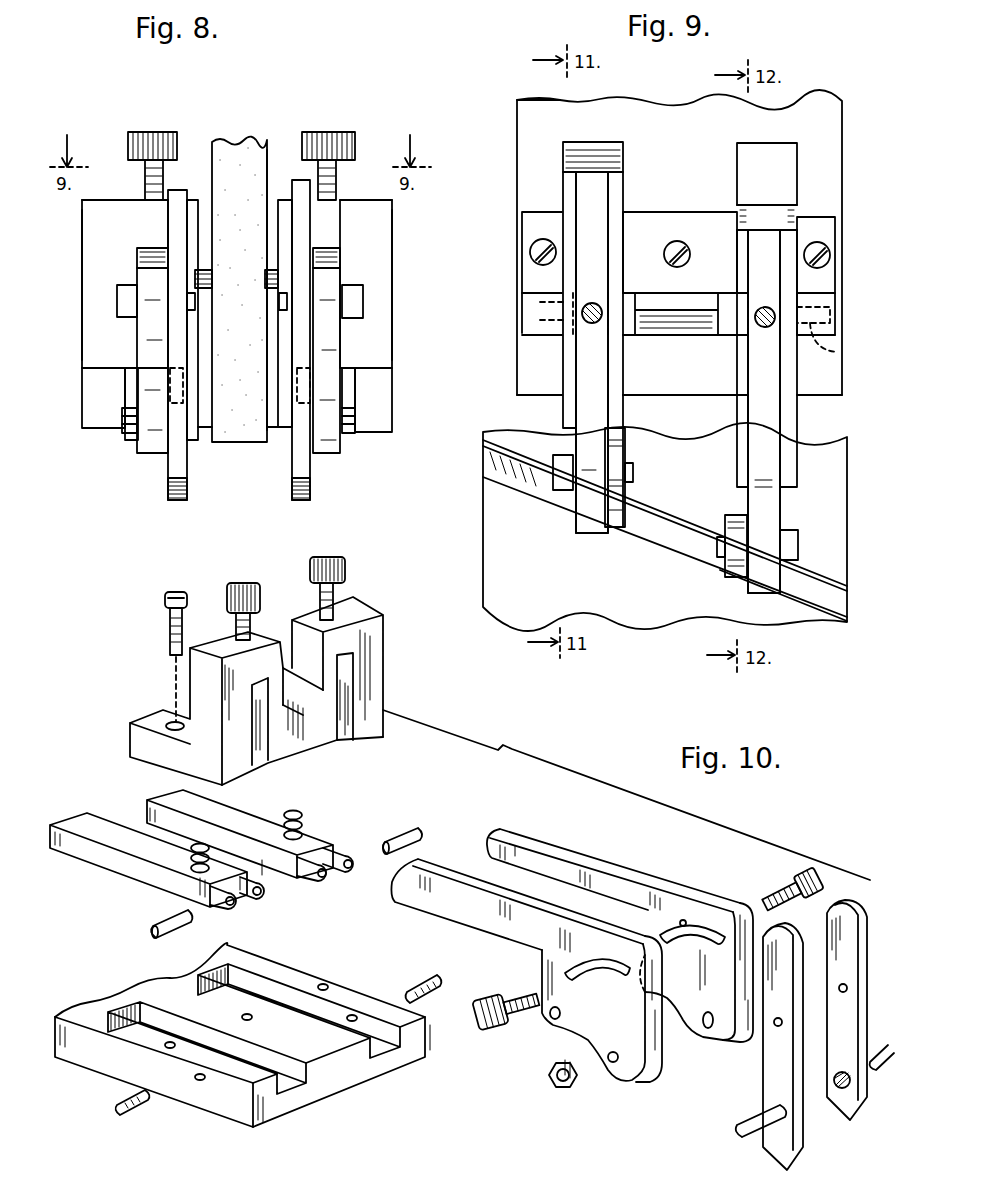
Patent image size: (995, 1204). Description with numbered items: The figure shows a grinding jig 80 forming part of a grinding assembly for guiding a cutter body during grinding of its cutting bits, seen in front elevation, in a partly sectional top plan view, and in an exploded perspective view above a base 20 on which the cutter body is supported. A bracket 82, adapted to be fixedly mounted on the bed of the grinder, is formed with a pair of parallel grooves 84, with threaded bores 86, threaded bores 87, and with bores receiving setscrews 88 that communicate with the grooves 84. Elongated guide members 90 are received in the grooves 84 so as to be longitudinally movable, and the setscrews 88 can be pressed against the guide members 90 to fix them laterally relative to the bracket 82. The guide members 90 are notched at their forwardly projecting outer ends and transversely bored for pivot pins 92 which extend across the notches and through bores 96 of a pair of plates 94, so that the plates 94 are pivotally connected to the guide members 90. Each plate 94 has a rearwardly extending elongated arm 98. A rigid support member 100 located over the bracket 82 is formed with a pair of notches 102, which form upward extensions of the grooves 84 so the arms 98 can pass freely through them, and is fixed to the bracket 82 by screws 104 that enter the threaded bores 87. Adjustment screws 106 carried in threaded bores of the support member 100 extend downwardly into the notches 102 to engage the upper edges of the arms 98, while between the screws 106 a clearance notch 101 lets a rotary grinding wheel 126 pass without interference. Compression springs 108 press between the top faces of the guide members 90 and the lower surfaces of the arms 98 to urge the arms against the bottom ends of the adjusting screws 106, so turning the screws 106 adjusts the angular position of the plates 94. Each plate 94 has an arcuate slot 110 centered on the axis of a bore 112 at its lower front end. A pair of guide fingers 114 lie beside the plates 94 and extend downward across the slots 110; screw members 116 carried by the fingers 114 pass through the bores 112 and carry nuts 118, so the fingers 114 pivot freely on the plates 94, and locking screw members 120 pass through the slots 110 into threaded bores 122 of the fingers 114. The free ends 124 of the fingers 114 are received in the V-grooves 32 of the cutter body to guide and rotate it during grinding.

In FIG. 9, the tool holder base 20 is at (636, 527).
In FIG. 9, the V-grooves 32 is at (636, 530).
In FIG. 8, the clamp assembly 80 is at (262, 222).
In FIG. 9, the clamp assembly 80 is at (519, 132).
In FIG. 8, the bracket 82 is at (214, 400).
In FIG. 9, the bracket 82 is at (679, 242).
In FIG. 10, the bracket 82 is at (235, 1035).
In FIG. 9, the grooves 84 is at (678, 370).
In FIG. 10, the grooves 84 is at (256, 1055).
In FIG. 10, the threaded bores 86 is at (271, 1051).
In FIG. 10, the threaded bores 87 is at (225, 1000).
In FIG. 9, the setscrews 88 is at (678, 311).
In FIG. 10, the setscrews 88 is at (265, 1042).
In FIG. 8, the guide members 90 is at (233, 397).
In FIG. 9, the guide members 90 is at (681, 329).
In FIG. 10, the guide members 90 is at (201, 839).
In FIG. 10, the pivot pins 92 is at (262, 863).
In FIG. 8, the plates 94 is at (236, 381).
In FIG. 9, the plates 94 is at (670, 504).
In FIG. 10, the plates 94 is at (647, 992).
In FIG. 10, the bores 96 is at (607, 1003).
In FIG. 8, the elongated arms 98 is at (237, 253).
In FIG. 9, the elongated arms 98 is at (681, 367).
In FIG. 10, the elongated arms 98 is at (560, 875).
In FIG. 8, the support member 100 is at (215, 284).
In FIG. 9, the support member 100 is at (707, 272).
In FIG. 10, the support member 100 is at (175, 708).
In FIG. 8, the clearance notch 101 is at (281, 269).
In FIG. 9, the clearance notch 101 is at (675, 298).
In FIG. 10, the clearance notch 101 is at (285, 639).
In FIG. 8, the notches 102 is at (237, 285).
In FIG. 10, the notches 102 is at (328, 691).
In FIG. 9, the screws 104 is at (680, 224).
In FIG. 10, the screws 104 is at (147, 623).
In FIG. 8, the adjustment screws 106 is at (241, 144).
In FIG. 9, the adjustment screws 106 is at (651, 293).
In FIG. 10, the adjustment screws 106 is at (303, 584).
In FIG. 10, the compression springs 108 is at (211, 838).
In FIG. 10, the arcuate slot 110 is at (641, 918).
In FIG. 10, the bore 112 is at (639, 1071).
In FIG. 8, the guide fingers 114 is at (233, 347).
In FIG. 9, the guide fingers 114 is at (701, 382).
In FIG. 10, the guide fingers 114 is at (806, 1028).
In FIG. 10, the screw members 116 is at (807, 1071).
In FIG. 8, the nuts 118 is at (244, 422).
In FIG. 10, the nuts 118 is at (540, 1091).
In FIG. 8, the locking screw members 120 is at (237, 285).
In FIG. 9, the locking screw members 120 is at (667, 507).
In FIG. 10, the locking screw members 120 is at (645, 941).
In FIG. 10, the threaded bores 122 is at (810, 1016).
In FIG. 8, the free ends 124 is at (236, 508).
In FIG. 10, the free ends 124 is at (813, 1129).
In FIG. 8, the rotary grinding wheel 126 is at (239, 269).